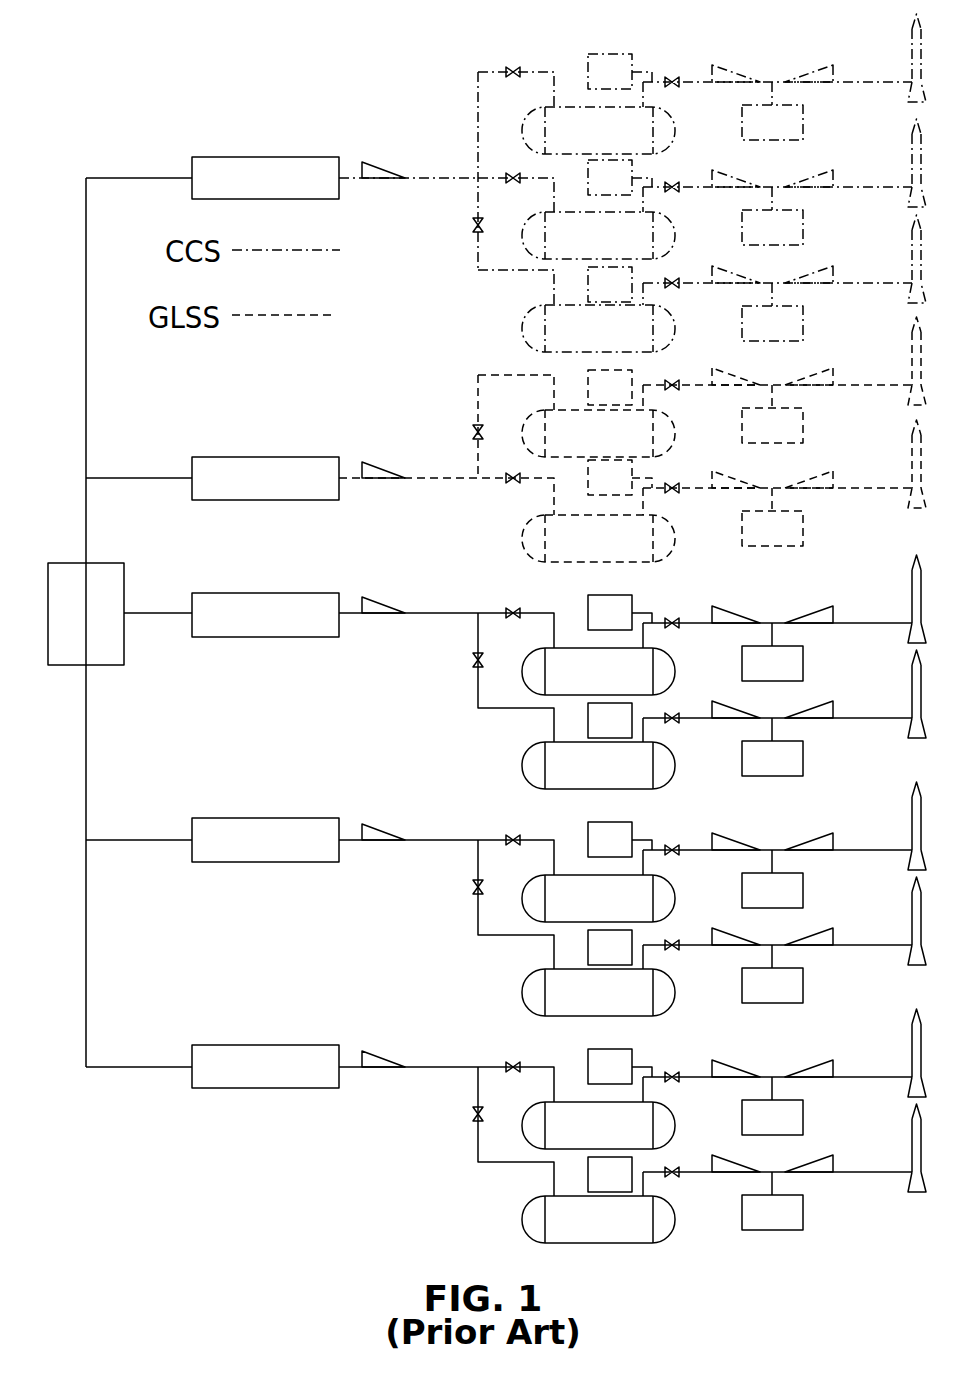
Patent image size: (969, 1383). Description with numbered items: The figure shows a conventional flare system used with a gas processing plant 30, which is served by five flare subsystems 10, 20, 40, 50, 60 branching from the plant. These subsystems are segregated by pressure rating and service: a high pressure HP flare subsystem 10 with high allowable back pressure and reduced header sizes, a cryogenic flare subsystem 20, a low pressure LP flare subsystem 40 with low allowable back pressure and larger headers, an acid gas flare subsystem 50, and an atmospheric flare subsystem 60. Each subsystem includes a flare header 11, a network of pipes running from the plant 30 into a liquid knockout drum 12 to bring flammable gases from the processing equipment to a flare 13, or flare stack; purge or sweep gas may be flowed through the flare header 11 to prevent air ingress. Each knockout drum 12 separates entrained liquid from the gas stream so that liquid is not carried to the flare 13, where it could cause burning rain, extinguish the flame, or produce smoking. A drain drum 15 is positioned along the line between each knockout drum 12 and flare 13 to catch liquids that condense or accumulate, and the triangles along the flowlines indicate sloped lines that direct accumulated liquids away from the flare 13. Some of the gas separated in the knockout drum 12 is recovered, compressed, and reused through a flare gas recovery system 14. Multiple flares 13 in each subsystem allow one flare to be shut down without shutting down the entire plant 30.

The HP flare subsystem 10 is at (323, 110).
The cryogenic flare subsystem 20 is at (323, 410).
The processing plant 30 is at (73, 630).
The LP flare subsystem 40 is at (323, 564).
The acid gas flare subsystem 50 is at (323, 767).
The atmospheric flare subsystem 60 is at (323, 1017).
The flare header 11 is at (252, 193).
The liquid knockout drum 12 is at (585, 145).
The flare 13 is at (912, 52).
The flare gas recovery (FGR) system 14 is at (597, 86).
The drain drum 15 is at (759, 137).